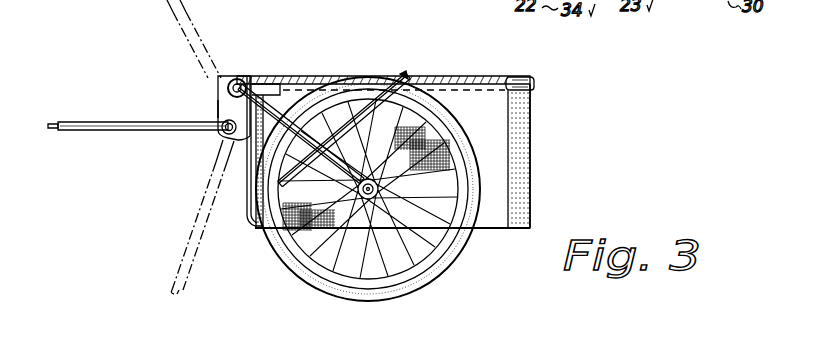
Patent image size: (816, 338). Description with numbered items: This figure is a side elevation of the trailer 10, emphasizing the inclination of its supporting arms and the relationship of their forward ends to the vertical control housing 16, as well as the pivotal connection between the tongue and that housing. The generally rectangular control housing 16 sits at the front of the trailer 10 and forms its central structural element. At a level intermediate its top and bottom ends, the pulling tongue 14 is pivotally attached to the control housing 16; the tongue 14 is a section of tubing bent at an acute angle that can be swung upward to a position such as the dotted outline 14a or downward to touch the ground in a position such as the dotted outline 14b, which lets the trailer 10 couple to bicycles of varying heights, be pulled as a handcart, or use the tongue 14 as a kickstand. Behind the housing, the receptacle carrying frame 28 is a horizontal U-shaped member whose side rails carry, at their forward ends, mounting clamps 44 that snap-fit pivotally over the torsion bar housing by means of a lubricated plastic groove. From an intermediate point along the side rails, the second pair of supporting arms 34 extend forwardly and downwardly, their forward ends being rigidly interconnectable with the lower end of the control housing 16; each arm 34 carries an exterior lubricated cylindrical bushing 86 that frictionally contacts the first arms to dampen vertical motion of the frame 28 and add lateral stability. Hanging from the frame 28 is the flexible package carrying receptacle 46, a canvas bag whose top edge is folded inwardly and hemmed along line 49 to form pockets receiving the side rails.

The trailer 10 is at (538, 192).
The pulling tongue 14 is at (143, 122).
The dotted outline (upward tongue position) 14a is at (171, 18).
The dotted outline (downward tongue position) 14b is at (200, 212).
The control housing 16 is at (217, 108).
The receptacle carrying frame 28 is at (518, 84).
The second pair of supporting arms 34 is at (382, 104).
The mounting clamps 44 is at (237, 78).
The flexible package carrying receptacle 46 is at (516, 126).
The hem line 49 is at (481, 88).
The cylindrical bushing 86 is at (338, 138).